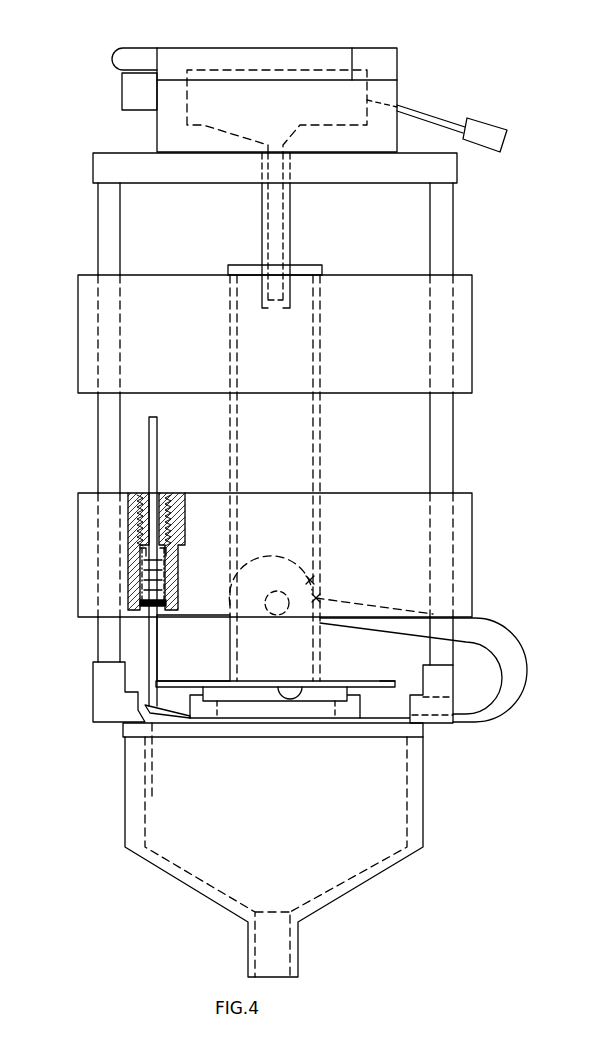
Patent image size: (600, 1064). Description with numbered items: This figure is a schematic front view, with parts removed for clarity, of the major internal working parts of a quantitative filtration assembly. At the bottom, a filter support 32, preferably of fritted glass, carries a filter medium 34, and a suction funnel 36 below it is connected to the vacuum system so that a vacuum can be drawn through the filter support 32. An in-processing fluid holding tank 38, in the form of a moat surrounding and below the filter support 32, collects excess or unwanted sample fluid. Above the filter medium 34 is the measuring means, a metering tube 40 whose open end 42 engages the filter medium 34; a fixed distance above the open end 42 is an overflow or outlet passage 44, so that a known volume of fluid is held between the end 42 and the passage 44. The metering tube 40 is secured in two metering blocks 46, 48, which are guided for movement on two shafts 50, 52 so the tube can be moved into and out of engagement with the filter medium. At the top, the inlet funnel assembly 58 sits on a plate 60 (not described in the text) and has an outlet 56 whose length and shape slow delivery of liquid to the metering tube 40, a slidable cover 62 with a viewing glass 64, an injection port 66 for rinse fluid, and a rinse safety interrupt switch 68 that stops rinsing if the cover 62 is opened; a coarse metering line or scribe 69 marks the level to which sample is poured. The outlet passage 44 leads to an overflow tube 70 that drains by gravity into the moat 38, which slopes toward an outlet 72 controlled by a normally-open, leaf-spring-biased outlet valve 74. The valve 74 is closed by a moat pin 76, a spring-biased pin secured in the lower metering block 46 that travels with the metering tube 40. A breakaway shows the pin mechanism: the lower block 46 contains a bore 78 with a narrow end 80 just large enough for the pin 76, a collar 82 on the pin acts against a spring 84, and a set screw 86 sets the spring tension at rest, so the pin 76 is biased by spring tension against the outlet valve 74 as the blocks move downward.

The filter support 32 is at (322, 696).
The filter medium 34 is at (380, 680).
The suction funnel 36 is at (425, 810).
The in-processing fluid holding tank 38 is at (390, 705).
The metering tube 40 is at (325, 447).
The open end 42 is at (312, 682).
The outlet passage 44 is at (318, 580).
The lower metering block 46 is at (85, 515).
The metering block 48 is at (85, 323).
The guide shaft 50 is at (445, 245).
The guide shaft 52 is at (105, 230).
The outlet of inlet funnel 56 is at (300, 307).
The inlet funnel assembly 58 is at (397, 93).
The top plate 60 is at (452, 172).
The slidable cover 62 is at (390, 60).
The viewing glass 64 is at (298, 75).
The injection port 66 is at (438, 118).
The rinse safety interrupt switch 68 is at (130, 90).
The coarse metering line 69 is at (237, 123).
The overflow tube 70 is at (512, 688).
The outlet 72 is at (150, 727).
The outlet valve 74 is at (145, 716).
The moat pin 76 is at (98, 672).
The bore 78 is at (160, 571).
The narrow end 80 is at (160, 617).
The collar 82 is at (137, 600).
The spring 84 is at (165, 603).
The set screw 86 is at (165, 515).